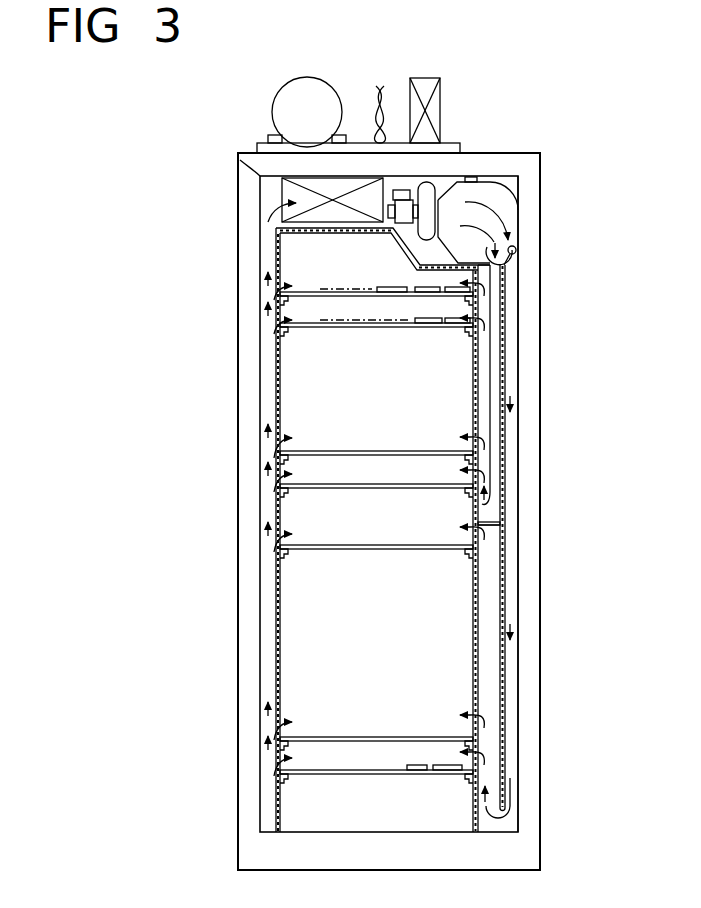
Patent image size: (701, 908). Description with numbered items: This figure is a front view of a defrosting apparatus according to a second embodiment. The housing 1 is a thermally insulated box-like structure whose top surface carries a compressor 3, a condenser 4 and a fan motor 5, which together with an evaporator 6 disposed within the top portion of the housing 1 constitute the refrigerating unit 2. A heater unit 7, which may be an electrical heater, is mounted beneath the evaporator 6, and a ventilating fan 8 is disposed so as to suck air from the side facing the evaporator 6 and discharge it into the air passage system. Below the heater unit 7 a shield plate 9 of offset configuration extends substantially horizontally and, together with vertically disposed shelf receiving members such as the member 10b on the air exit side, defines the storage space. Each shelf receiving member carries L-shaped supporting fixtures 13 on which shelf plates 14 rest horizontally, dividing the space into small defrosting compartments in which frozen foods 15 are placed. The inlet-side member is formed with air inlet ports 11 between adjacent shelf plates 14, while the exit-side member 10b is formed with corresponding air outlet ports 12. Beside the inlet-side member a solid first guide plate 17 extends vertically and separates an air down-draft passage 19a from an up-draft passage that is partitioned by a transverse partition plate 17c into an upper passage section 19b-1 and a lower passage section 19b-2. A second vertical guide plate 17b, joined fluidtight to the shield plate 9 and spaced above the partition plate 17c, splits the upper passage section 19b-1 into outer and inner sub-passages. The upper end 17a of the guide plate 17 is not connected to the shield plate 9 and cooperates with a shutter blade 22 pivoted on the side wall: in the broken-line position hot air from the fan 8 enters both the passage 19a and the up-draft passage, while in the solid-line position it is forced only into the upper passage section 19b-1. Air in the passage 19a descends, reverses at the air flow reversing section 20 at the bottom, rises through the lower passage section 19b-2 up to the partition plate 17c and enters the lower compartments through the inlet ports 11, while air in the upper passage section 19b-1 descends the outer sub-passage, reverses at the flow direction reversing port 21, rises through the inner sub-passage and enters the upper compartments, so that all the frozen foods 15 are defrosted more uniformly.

The housing 1 is at (521, 152).
The refrigerating unit 2 is at (452, 82).
The compressor 3 is at (307, 88).
The condenser 4 is at (441, 107).
The fan motor 5 is at (377, 86).
The evaporator 6 is at (240, 160).
The heater unit 7 is at (290, 203).
The ventilating fan 8 is at (436, 190).
The shield plate 9 is at (293, 238).
The shelf receiving member 10b is at (276, 513).
The air inlet port 11 is at (483, 291).
The air outlet port 12 is at (277, 323).
The supporting fixture 13 is at (469, 332).
The shelf plate 14 is at (286, 333).
The frozen foods 15 is at (378, 287).
The guide plate 17 is at (506, 576).
The upper end of guide plate 17a is at (506, 242).
The second vertical guide plate 17b is at (496, 428).
The transverse partition plate 17c is at (500, 545).
The air down-draft passage 19a is at (513, 652).
The upper passage section 19b-1 is at (494, 320).
The lower passage section 19b-2 is at (492, 640).
The air flow reversing section 20 is at (506, 825).
The flow direction reversing port 21 is at (495, 498).
The shutter blade 22 is at (516, 256).